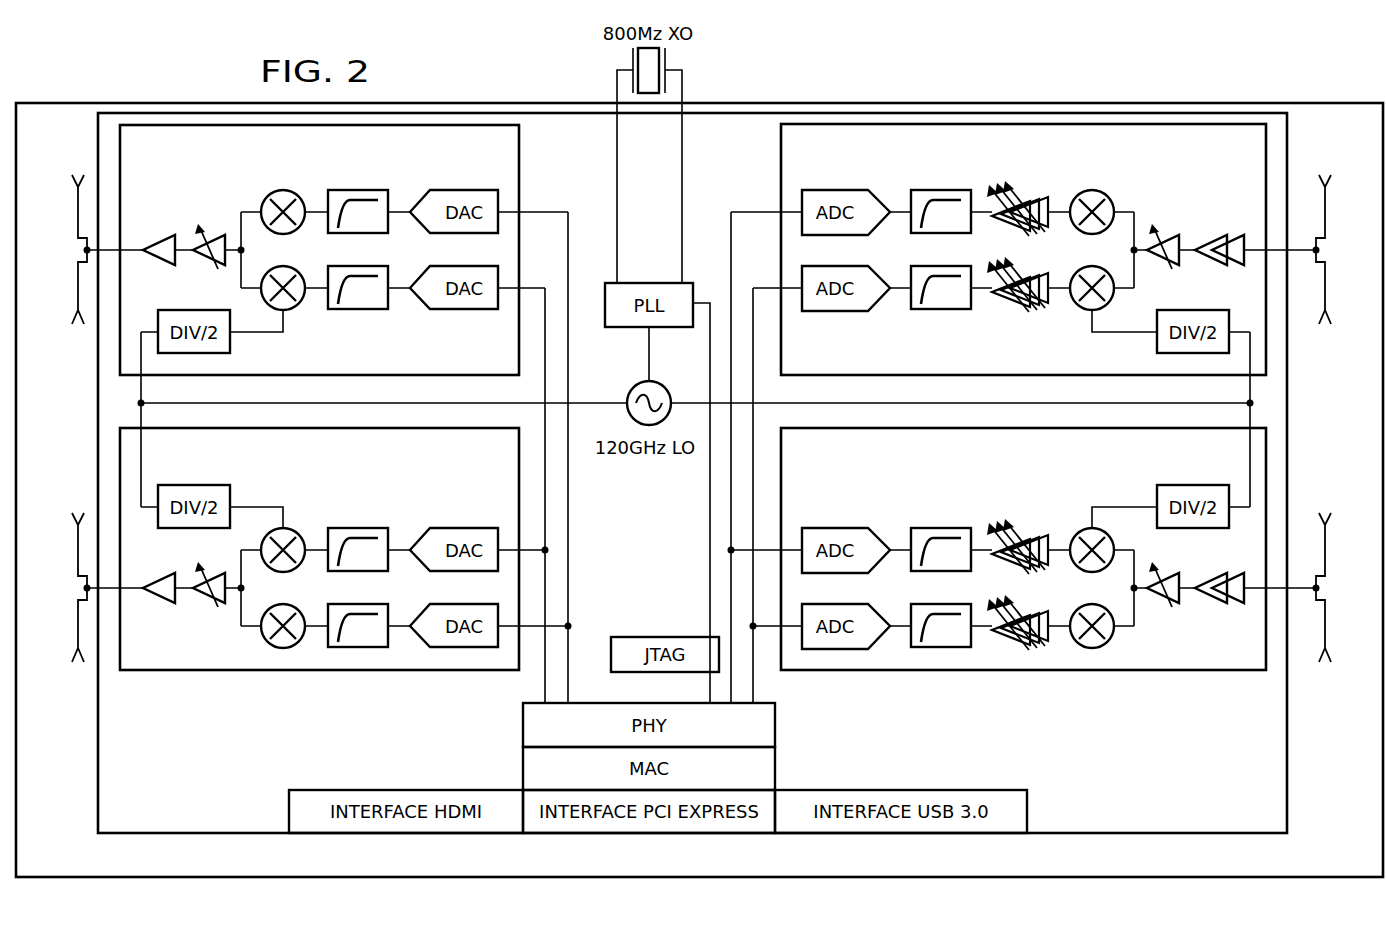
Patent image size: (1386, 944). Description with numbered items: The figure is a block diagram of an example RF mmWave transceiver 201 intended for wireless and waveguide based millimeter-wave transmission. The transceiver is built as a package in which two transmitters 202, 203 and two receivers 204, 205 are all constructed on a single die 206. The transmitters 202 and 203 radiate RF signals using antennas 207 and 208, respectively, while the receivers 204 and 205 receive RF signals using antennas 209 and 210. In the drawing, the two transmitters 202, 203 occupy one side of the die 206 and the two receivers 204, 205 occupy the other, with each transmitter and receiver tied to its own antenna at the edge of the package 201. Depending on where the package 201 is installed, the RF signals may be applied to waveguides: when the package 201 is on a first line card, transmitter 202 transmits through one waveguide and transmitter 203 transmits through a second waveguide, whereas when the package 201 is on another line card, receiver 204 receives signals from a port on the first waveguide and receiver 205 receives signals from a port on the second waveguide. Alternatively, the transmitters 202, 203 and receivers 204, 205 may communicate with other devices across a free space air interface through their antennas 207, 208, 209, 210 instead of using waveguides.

The RF mmWave transceiver 201 is at (1023, 98).
The transmitter 202 is at (525, 154).
The transmitter 203 is at (175, 678).
The receiver 204 is at (777, 154).
The receiver 205 is at (1181, 678).
The die 206 is at (1293, 743).
The antenna 207 is at (78, 322).
The antenna 208 is at (78, 660).
The antenna 209 is at (1325, 322).
The antenna 210 is at (1325, 660).